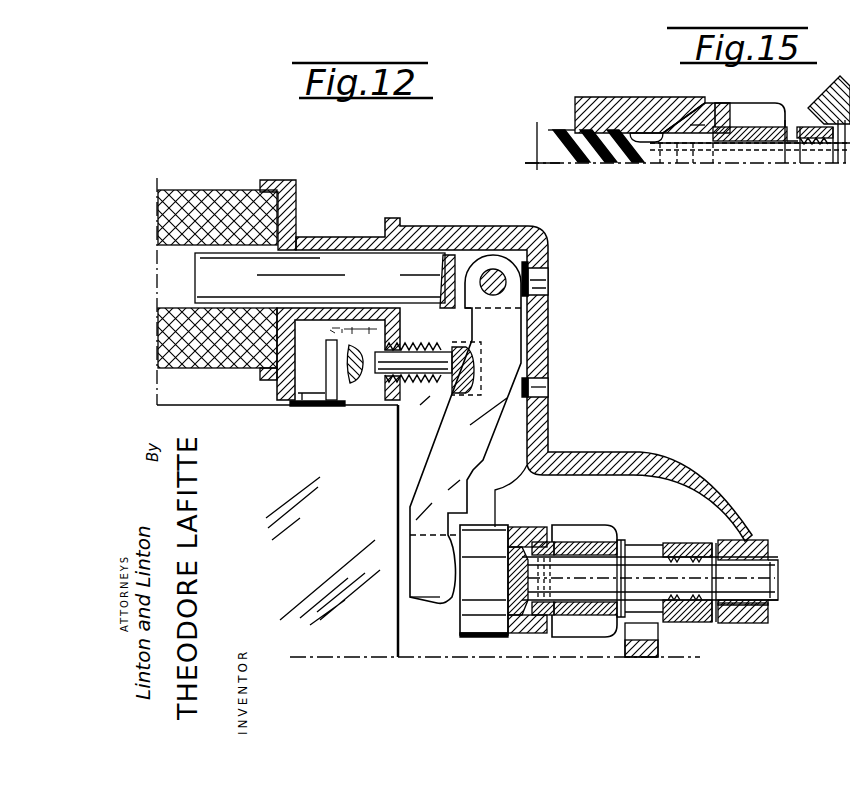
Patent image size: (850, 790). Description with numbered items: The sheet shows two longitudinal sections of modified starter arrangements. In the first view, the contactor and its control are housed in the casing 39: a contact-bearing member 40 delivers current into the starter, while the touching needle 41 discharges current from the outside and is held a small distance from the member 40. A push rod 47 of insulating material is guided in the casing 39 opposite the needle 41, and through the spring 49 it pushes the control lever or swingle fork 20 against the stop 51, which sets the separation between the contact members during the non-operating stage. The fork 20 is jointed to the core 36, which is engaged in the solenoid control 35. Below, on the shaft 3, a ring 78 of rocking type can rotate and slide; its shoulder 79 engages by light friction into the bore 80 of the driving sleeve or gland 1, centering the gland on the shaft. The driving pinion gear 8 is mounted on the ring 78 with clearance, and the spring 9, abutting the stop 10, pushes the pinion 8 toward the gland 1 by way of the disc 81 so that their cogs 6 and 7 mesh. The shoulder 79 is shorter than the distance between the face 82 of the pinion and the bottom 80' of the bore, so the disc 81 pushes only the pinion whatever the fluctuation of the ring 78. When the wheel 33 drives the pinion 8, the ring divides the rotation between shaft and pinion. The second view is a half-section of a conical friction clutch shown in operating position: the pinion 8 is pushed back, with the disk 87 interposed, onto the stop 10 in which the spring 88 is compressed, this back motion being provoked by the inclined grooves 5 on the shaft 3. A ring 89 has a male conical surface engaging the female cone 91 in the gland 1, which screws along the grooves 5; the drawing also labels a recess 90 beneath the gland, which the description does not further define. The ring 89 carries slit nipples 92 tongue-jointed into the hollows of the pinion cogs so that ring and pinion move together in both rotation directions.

In FIG. 12, the driving sleeve or gland 1 is at (475, 618).
In FIG. 15, the driving sleeve or gland 1 is at (597, 117).
In FIG. 12, the shaft 3 is at (743, 577).
In FIG. 15, the shaft 3 is at (748, 153).
In FIG. 15, the grooves 5 is at (598, 155).
In FIG. 12, the cogs 6 is at (550, 547).
In FIG. 12, the cogs 7 is at (545, 618).
In FIG. 12, the driving pinion gear 8 is at (573, 617).
In FIG. 15, the driving pinion gear 8 is at (753, 117).
In FIG. 12, the spring 9 is at (647, 552).
In FIG. 12, the stop 10 is at (707, 615).
In FIG. 15, the stop 10 is at (807, 130).
In FIG. 12, the control lever or swingle fork 20 is at (457, 455).
In FIG. 12, the wheel 33 is at (660, 644).
In FIG. 12, the solenoid control 35 is at (200, 205).
In FIG. 12, the core 36 is at (323, 273).
In FIG. 12, the casing 39 is at (297, 187).
In FIG. 12, the contact-bearing member 40 is at (332, 355).
In FIG. 12, the resilient member (touching needle) 41 is at (357, 373).
In FIG. 12, the push rod 47 is at (417, 363).
In FIG. 12, the spring 49 is at (427, 393).
In FIG. 12, the stop 51 is at (540, 392).
In FIG. 12, the ring 78 is at (600, 525).
In FIG. 12, the shoulder 79 is at (508, 620).
In FIG. 12, the bore 80 is at (543, 554).
In FIG. 12, the bottom of internal bore 80' is at (527, 546).
In FIG. 12, the disc 81 is at (613, 552).
In FIG. 12, the face 82 is at (563, 540).
In FIG. 15, the disk 87 is at (786, 137).
In FIG. 15, the spring 88 is at (807, 145).
In FIG. 15, the ring 89 is at (681, 133).
In FIG. 15, the recess 90 is at (688, 122).
In FIG. 15, the female cone 91 is at (690, 133).
In FIG. 15, the nipples 92 is at (727, 103).